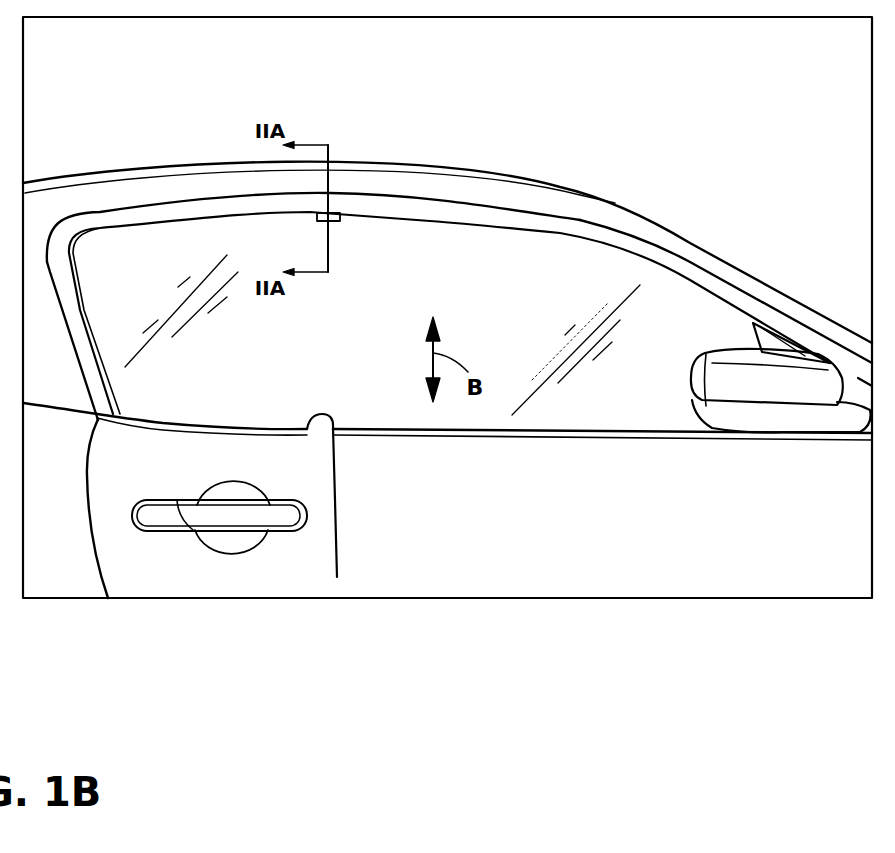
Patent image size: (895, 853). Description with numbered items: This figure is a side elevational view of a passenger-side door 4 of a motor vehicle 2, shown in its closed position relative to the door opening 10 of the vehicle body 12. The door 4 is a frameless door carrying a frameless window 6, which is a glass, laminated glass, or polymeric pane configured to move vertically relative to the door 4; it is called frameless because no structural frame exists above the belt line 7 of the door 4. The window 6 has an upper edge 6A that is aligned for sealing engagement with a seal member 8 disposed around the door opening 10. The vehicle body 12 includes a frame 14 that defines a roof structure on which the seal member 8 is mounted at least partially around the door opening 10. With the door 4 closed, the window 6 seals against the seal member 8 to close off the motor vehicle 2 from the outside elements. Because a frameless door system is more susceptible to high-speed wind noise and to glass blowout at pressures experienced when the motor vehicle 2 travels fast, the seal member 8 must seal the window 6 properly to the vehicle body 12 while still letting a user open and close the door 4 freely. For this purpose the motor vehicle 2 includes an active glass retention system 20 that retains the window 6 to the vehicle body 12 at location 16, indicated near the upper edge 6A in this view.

The motor vehicle 2 is at (720, 247).
The door 4 is at (423, 550).
The frameless window 6 is at (577, 272).
The upper edge 6A is at (490, 220).
The belt line 7 is at (337, 577).
The seal member 8 is at (185, 213).
The door opening 10 is at (80, 284).
The vehicle body 12 is at (570, 210).
The frame 14 is at (433, 172).
The location 16 is at (347, 221).
The active glass retention system 20 is at (342, 203).